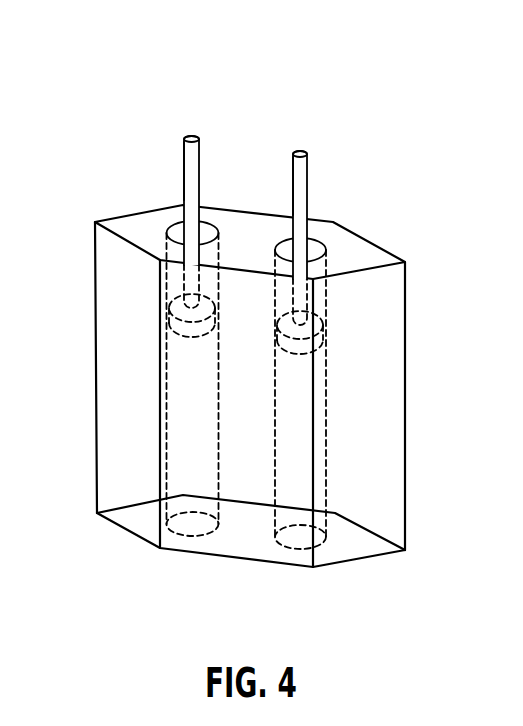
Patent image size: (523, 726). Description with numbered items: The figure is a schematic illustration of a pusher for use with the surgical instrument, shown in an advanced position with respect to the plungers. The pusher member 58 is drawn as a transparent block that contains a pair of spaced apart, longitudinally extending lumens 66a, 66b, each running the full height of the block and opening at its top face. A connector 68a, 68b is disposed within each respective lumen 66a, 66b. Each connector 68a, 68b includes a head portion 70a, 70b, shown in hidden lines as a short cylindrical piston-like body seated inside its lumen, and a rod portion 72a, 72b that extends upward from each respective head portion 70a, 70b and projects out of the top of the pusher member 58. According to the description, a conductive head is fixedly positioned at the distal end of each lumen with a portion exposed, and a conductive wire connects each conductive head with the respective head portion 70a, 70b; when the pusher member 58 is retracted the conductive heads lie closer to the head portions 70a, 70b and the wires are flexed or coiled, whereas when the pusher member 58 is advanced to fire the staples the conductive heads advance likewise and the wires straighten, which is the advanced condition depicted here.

The pusher member 58 is at (350, 90).
The lumen 66a is at (178, 221).
The lumen 66b is at (312, 237).
The connector 68a is at (204, 148).
The connector 68b is at (313, 164).
The head portion 70a is at (196, 337).
The head portion 70b is at (297, 352).
The rod portion 72a is at (184, 157).
The rod portion 72b is at (293, 192).